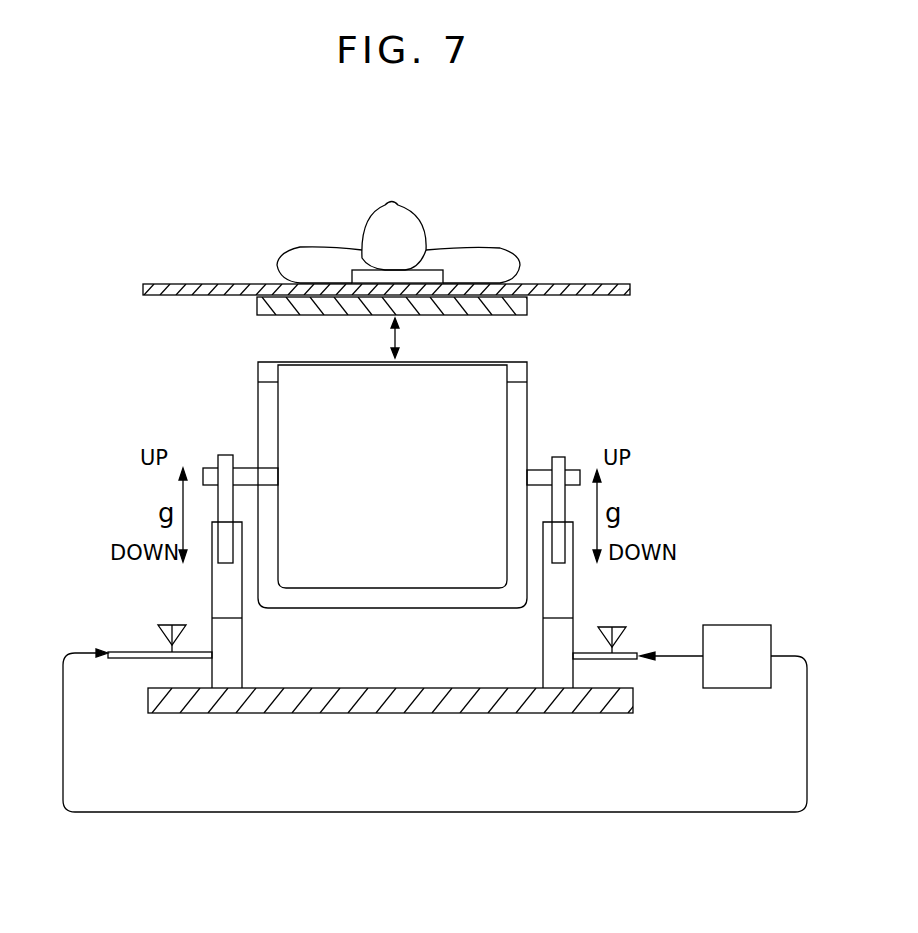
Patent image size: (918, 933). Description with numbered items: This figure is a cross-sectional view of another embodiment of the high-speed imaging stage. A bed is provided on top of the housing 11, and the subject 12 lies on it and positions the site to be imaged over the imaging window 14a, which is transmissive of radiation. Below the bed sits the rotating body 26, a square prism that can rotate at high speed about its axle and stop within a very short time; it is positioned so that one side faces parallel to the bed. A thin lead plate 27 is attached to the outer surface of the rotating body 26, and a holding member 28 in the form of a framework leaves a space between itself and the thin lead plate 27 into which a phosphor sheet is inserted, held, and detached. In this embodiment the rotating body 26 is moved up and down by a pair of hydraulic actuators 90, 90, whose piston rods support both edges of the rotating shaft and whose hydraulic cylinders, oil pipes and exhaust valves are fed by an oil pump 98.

The housing 11 is at (195, 292).
The subject 12 is at (465, 247).
The imaging window 14a is at (555, 285).
The rotating body 26 is at (249, 388).
The thin lead plate 27 is at (470, 380).
The holding member 28 is at (518, 400).
The hydraulic actuator 90 is at (98, 494).
The oil pump 98 is at (745, 632).